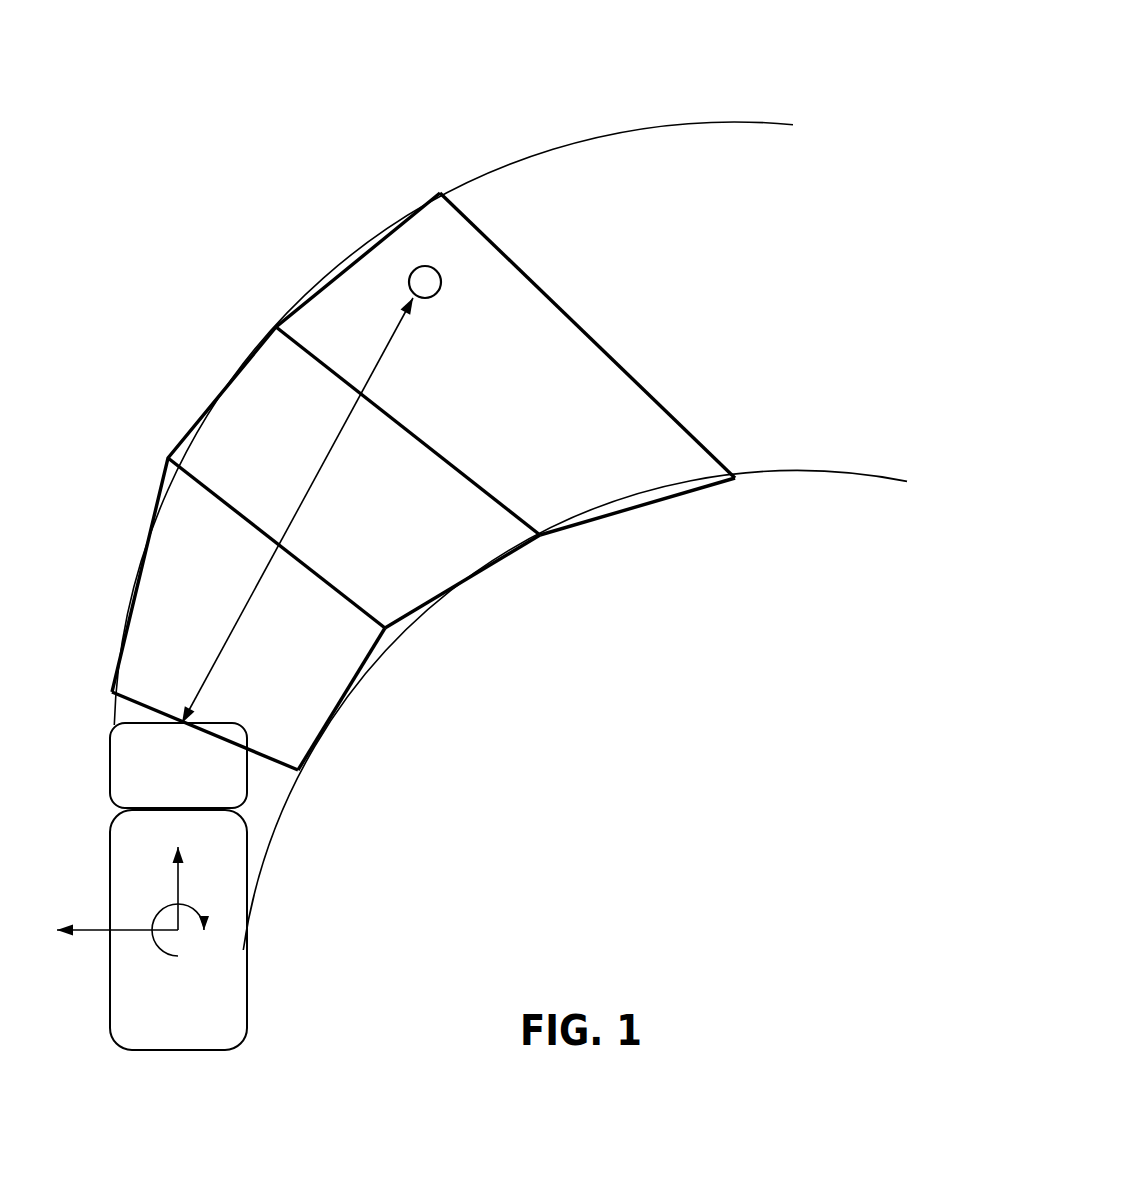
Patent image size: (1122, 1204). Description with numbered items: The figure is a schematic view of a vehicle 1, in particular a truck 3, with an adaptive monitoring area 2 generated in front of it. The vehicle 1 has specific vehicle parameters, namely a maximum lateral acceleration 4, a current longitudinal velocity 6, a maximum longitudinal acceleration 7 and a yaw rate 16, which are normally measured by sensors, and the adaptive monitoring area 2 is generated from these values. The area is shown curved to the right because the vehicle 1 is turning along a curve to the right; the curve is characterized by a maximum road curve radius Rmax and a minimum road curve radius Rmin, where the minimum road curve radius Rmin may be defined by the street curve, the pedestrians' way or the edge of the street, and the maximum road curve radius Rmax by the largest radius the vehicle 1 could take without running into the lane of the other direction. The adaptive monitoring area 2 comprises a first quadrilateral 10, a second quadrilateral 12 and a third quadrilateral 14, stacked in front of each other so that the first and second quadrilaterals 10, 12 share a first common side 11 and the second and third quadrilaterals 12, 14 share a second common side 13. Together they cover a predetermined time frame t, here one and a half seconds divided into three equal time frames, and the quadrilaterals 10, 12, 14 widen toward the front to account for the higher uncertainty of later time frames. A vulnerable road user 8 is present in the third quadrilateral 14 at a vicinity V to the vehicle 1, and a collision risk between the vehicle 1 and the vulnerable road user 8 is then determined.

The vehicle 1 is at (222, 886).
The truck 3 is at (228, 985).
The adaptive monitoring area 2 is at (320, 238).
The maximum lateral acceleration 4 is at (80, 931).
The current longitudinal velocity 6 is at (114, 888).
The maximum longitudinal acceleration 7 is at (177, 867).
The vulnerable road user 8 is at (422, 280).
The first quadrilateral 10 is at (343, 710).
The first common side 11 is at (323, 576).
The second quadrilateral 12 is at (480, 576).
The second common side 13 is at (417, 431).
The third quadrilateral 14 is at (640, 510).
The yaw rate 16 is at (177, 957).
The vicinity V is at (333, 445).
The predetermined time frame t is at (736, 482).
The minimum road curve radius Rmin is at (873, 478).
The maximum road curve radius Rmax is at (683, 123).